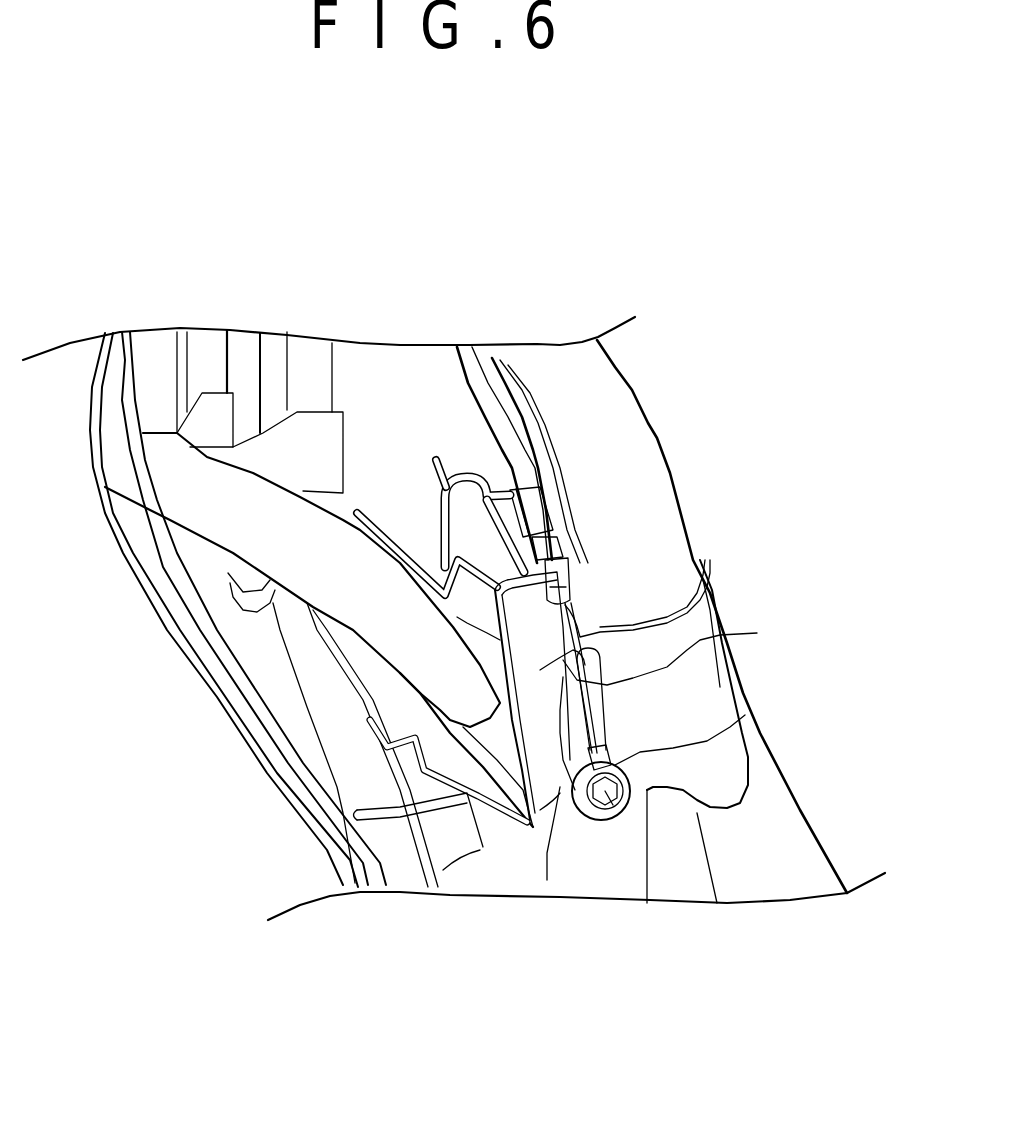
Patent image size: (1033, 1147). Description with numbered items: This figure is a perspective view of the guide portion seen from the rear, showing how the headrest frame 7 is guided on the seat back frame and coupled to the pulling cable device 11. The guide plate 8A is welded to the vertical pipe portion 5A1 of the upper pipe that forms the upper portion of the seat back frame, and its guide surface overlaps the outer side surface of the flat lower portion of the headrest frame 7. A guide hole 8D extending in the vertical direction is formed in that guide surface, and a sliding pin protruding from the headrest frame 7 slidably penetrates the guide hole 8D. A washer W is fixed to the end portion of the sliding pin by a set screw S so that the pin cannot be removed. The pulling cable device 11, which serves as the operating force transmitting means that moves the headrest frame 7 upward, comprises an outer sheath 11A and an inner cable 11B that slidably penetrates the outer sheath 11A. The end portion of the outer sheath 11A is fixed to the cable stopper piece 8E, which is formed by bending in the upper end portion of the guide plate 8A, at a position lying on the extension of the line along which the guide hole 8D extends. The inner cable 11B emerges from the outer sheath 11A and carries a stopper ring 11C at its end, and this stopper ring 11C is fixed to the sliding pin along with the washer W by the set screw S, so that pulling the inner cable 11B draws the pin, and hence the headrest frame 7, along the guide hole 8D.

The headrest frame 7 is at (368, 656).
The pulling cable device 11 is at (582, 550).
The outer sheath 11A is at (557, 540).
The inner cable 11B is at (605, 685).
The stopper ring 11C is at (610, 770).
The vertical pipe portion 5A1 is at (673, 530).
The cable stopper piece 8E is at (635, 682).
The guide hole 8D is at (537, 832).
The guide plate 8A is at (547, 890).
The washer W is at (607, 820).
The set screw S is at (617, 820).